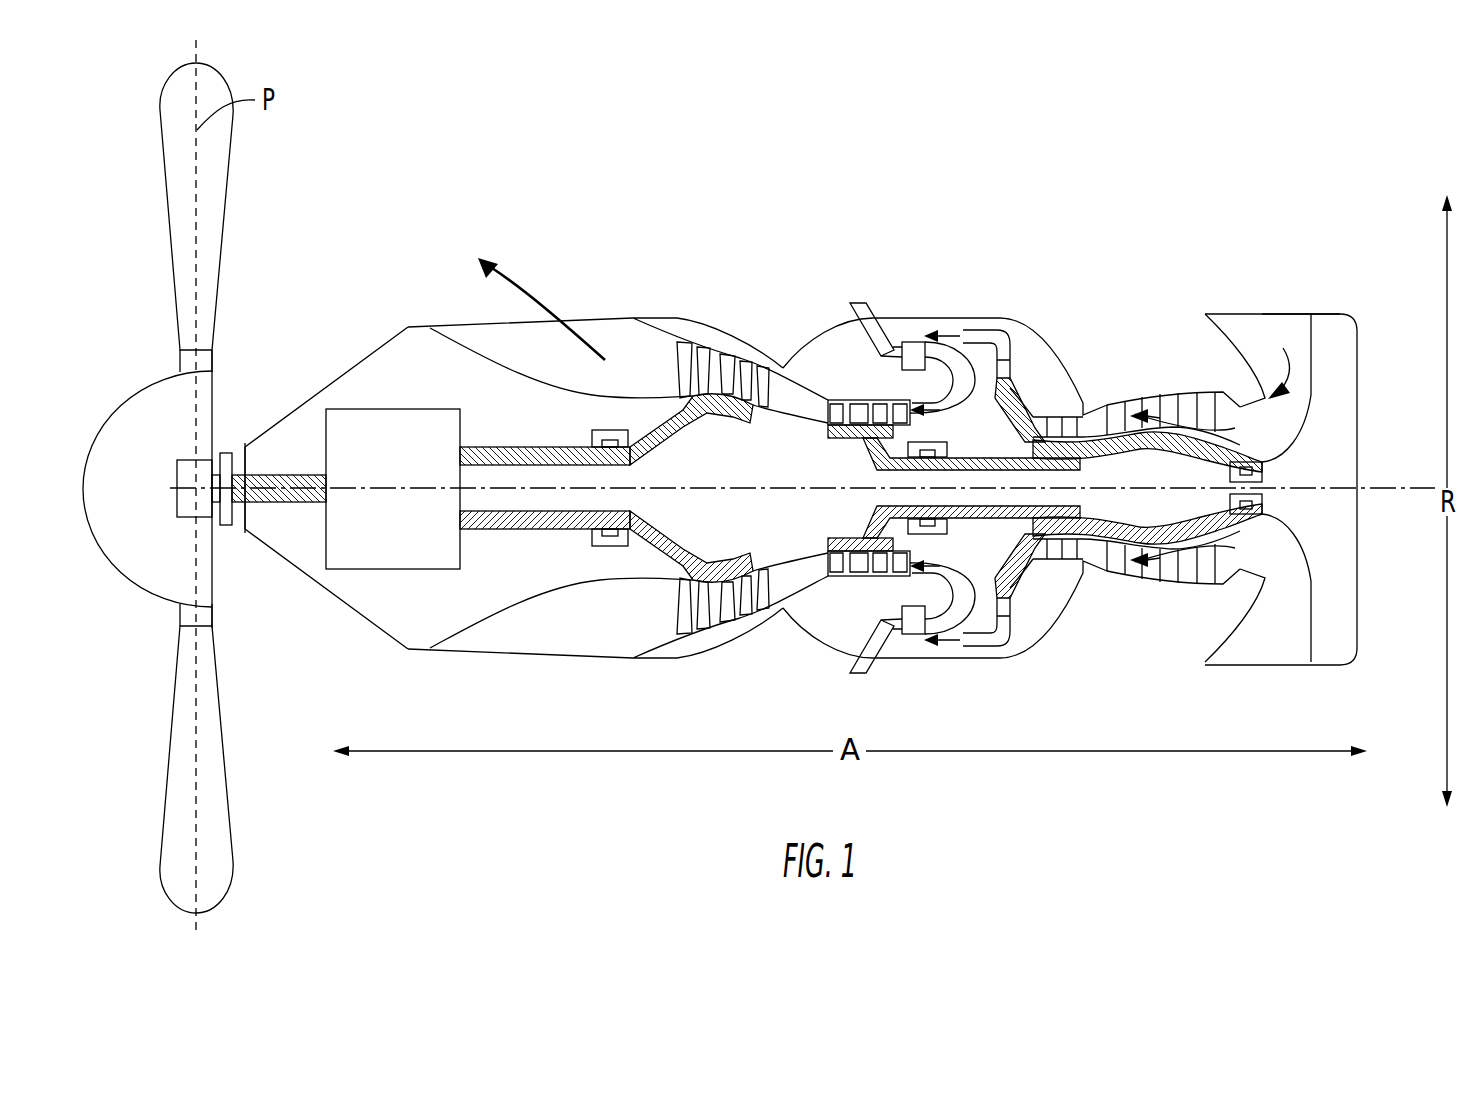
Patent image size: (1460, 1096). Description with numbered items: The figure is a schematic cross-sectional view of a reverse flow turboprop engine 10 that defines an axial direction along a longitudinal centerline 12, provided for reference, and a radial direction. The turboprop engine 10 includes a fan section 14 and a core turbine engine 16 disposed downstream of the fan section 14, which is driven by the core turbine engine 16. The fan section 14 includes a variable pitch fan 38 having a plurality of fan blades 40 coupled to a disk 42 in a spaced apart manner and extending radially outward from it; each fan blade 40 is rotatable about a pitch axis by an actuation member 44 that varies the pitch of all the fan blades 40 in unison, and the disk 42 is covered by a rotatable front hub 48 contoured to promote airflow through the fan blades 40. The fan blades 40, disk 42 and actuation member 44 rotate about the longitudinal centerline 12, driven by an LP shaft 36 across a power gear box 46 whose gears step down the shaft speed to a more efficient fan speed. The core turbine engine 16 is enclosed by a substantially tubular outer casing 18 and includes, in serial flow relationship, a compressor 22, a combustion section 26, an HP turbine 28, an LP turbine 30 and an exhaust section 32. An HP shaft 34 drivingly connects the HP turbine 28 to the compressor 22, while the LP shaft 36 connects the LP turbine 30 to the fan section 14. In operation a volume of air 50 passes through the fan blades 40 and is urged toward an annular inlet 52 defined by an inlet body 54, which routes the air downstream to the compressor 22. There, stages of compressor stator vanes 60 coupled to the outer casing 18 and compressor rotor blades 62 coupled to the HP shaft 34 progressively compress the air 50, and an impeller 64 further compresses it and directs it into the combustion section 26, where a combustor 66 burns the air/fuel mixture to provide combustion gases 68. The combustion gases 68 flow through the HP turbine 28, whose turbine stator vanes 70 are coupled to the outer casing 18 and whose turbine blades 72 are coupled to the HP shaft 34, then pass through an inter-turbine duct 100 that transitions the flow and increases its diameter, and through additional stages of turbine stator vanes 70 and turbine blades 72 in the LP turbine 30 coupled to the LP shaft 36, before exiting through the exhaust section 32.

The reverse flow turboprop engine 10 is at (397, 273).
The longitudinal centerline 12 is at (1378, 488).
The fan section 14 is at (232, 226).
The core turbine engine 16 is at (677, 240).
The outer casing 18 is at (943, 317).
The compressor 22 is at (1170, 605).
The combustion section 26 is at (915, 665).
The HP turbine 28 is at (862, 652).
The LP turbine 30 is at (710, 650).
The exhaust section 32 is at (596, 648).
The HP shaft 34 is at (1085, 415).
The LP shaft 36 is at (653, 402).
The variable pitch fan 38 is at (135, 602).
The fan blades 40 is at (162, 162).
The disk 42 is at (215, 358).
The actuation member 44 is at (172, 463).
The power gear box 46 is at (383, 408).
The front hub 48 is at (105, 565).
The volume of air 50 is at (1290, 375).
The annular inlet 52 is at (1261, 298).
The inlet body 54 is at (1318, 298).
The compressor stator vanes 60 is at (1187, 563).
The compressor rotor blades 62 is at (1167, 563).
The impeller 64 is at (1017, 568).
The combustor 66 is at (913, 345).
The combustion gases 68 is at (953, 395).
The turbine stator vanes 70 is at (705, 350).
The turbine blades 72 is at (680, 360).
The inter-turbine duct 100 is at (790, 365).